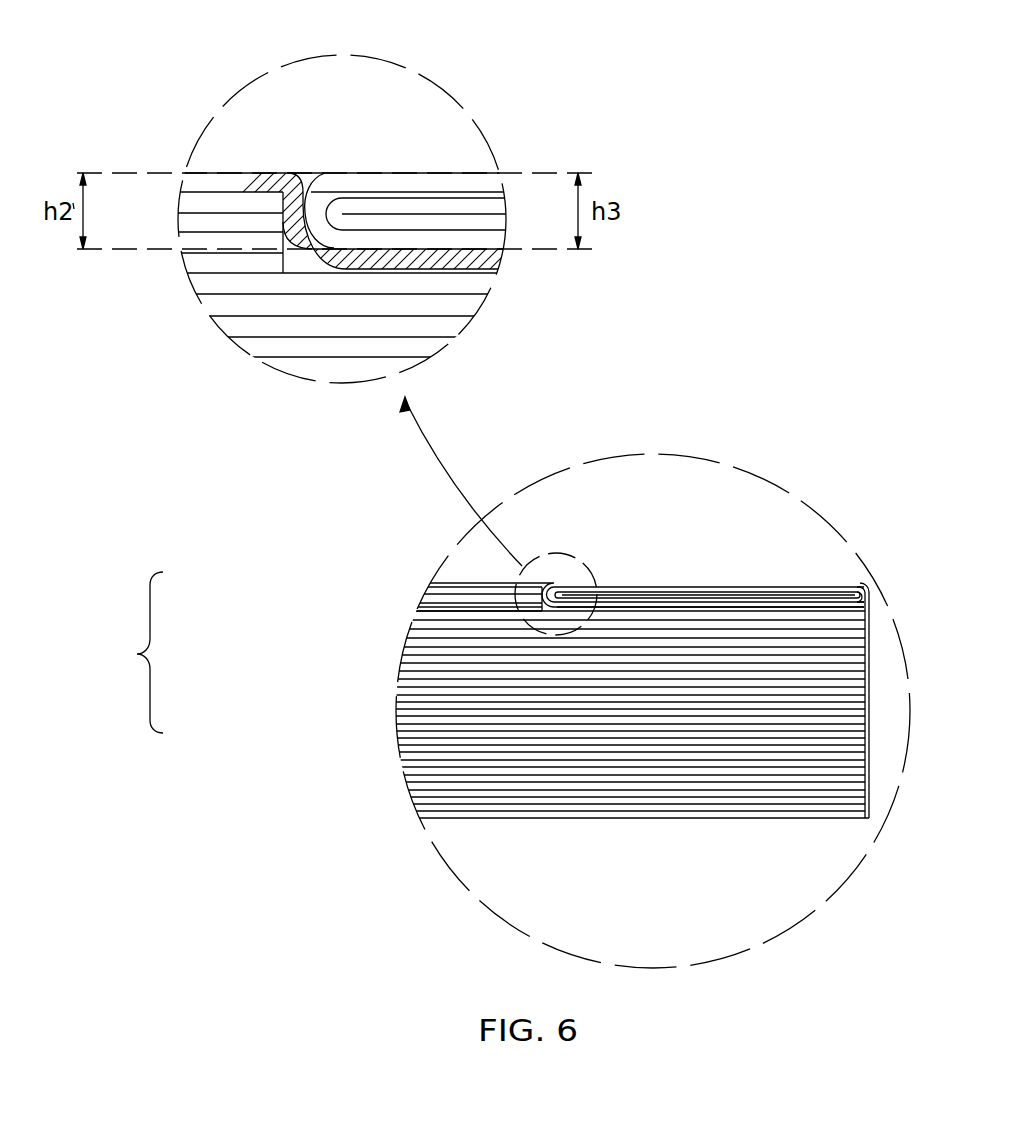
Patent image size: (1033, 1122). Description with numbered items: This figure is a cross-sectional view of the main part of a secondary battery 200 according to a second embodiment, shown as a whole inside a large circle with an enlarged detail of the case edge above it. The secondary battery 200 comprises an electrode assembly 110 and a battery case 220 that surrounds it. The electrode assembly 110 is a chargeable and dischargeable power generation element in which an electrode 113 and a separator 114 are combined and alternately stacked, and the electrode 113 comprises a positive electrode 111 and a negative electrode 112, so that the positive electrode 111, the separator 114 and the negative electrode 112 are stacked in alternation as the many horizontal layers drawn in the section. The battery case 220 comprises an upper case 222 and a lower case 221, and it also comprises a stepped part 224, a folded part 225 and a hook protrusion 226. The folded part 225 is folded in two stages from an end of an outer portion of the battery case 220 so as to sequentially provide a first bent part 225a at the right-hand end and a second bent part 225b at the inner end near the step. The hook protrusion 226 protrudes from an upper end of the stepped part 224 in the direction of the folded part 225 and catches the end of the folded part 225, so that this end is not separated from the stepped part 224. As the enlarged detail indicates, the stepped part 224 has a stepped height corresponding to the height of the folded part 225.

The electrode assembly 110 is at (186, 288).
The positive electrode 111 is at (417, 597).
The negative electrode 112 is at (412, 615).
The electrode 113 is at (297, 640).
The separator 114 is at (430, 588).
The secondary battery 200 is at (905, 450).
The battery case 220 is at (163, 97).
The lower case 221 is at (437, 818).
The upper case 222 is at (190, 178).
The stepped part 224 is at (402, 262).
The folded part 225 is at (411, 171).
The first bent part 225a is at (860, 582).
The second bent part 225b is at (312, 195).
The hook protrusion 226 is at (300, 178).